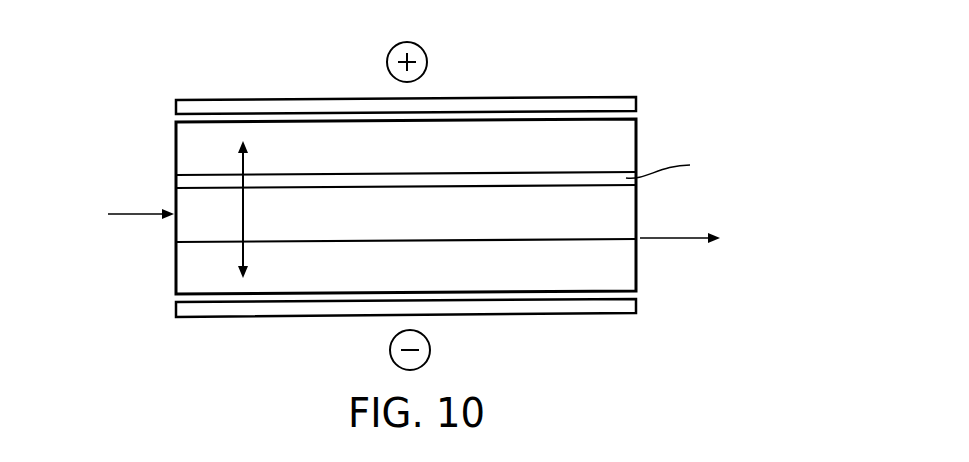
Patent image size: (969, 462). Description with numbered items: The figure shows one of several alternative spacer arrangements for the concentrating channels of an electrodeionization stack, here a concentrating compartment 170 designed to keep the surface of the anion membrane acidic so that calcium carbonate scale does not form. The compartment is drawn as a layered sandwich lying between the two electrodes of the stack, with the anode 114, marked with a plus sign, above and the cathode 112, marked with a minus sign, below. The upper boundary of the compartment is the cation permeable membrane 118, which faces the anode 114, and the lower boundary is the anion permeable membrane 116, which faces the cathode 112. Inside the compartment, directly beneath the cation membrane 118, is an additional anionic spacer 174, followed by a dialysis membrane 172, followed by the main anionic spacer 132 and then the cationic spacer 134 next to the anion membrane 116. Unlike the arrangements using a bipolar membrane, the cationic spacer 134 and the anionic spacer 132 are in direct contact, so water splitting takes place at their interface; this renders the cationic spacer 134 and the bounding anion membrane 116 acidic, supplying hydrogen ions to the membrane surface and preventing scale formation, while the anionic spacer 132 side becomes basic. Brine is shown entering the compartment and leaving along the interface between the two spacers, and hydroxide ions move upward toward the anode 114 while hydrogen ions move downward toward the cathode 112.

The concentrating compartment 170 is at (244, 78).
The anode 114 is at (427, 60).
The cation permeable membrane 118 is at (530, 97).
The additional anionic spacer 174 is at (626, 131).
The dialysis membrane 172 is at (633, 176).
The anionic spacer 132 is at (626, 211).
The cationic spacer 134 is at (626, 262).
The cathode 112 is at (430, 350).
The anion permeable membrane 116 is at (533, 315).